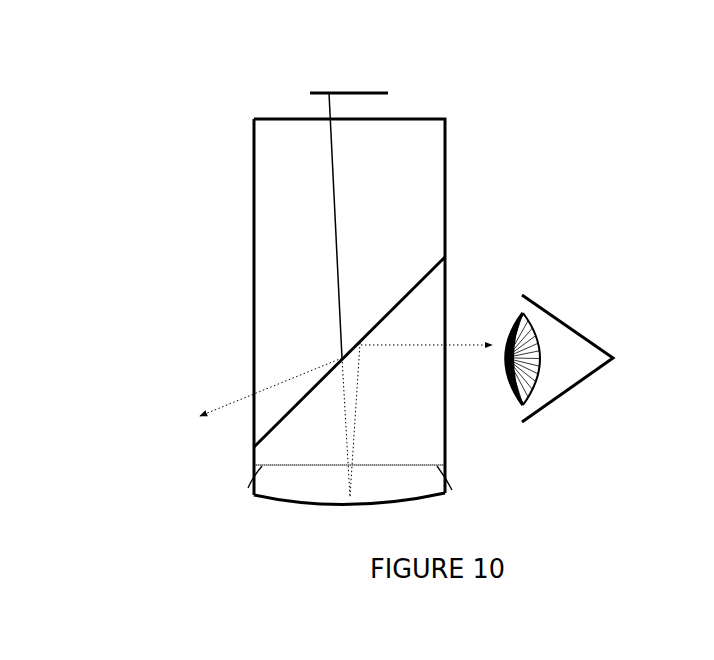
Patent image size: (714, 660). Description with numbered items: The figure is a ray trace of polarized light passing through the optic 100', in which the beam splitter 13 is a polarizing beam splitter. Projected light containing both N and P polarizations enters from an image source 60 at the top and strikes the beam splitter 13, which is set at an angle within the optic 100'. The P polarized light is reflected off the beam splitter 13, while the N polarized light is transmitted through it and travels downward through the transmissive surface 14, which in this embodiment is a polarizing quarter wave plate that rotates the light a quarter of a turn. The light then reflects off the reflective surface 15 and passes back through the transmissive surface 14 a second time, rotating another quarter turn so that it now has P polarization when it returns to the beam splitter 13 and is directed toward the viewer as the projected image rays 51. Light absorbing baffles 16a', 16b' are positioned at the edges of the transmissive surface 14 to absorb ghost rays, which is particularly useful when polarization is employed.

The optic 100' is at (251, 295).
The image source 60 is at (347, 92).
The beam splitter 13 is at (423, 274).
The projected image rays 51 is at (463, 345).
The transmissive surface 14 is at (300, 467).
The reflective surface 15 is at (333, 505).
The light absorbing baffle 16a' is at (225, 492).
The light absorbing baffle 16b' is at (485, 487).